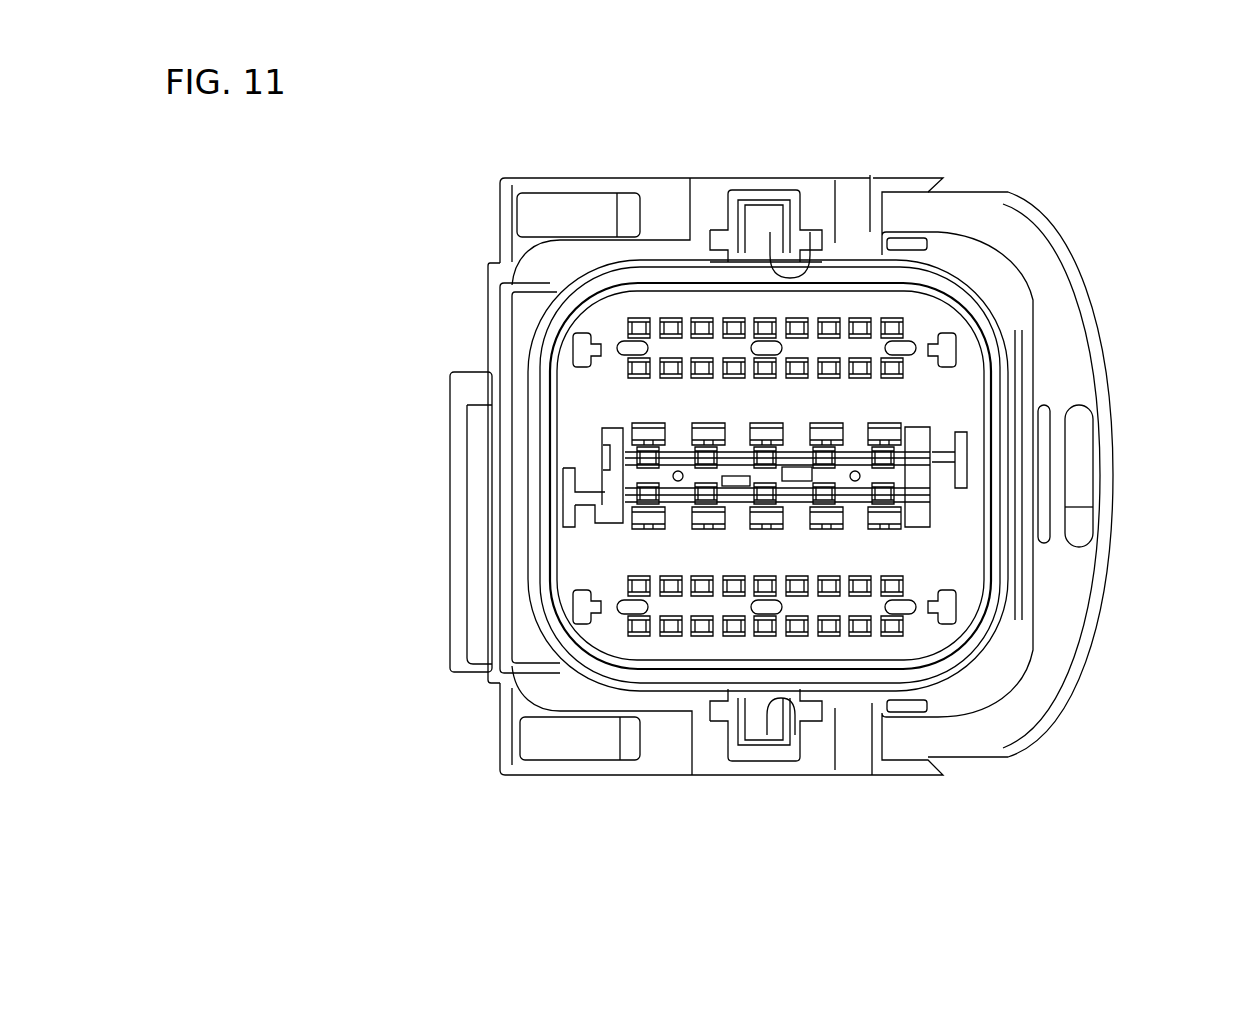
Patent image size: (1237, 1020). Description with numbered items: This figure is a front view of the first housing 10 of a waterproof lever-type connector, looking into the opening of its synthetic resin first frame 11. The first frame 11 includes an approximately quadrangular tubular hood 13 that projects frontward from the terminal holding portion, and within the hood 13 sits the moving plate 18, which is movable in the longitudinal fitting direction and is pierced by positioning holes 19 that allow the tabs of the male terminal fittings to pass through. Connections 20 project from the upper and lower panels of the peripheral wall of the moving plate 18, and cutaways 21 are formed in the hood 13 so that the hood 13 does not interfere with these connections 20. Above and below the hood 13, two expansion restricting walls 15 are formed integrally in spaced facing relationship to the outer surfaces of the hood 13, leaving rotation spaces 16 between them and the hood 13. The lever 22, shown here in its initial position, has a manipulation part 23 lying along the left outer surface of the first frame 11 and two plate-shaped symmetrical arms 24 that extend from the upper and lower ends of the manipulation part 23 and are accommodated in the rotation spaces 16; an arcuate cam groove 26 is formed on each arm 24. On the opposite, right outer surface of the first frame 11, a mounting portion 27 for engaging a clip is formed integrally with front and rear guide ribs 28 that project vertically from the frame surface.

The first housing 10 is at (460, 143).
The first frame 11 is at (458, 304).
The hood 13 is at (597, 250).
The expansion restricting walls 15 is at (680, 178).
The rotation spaces 16 is at (563, 200).
The moving plate 18 is at (948, 397).
The positioning holes 19 is at (888, 428).
The connections 20 is at (758, 202).
The cutaways 21 is at (786, 205).
The lever 22 is at (1143, 409).
The manipulation part 23 is at (1080, 558).
The arms 24 is at (905, 212).
The cam groove 26 is at (848, 250).
The mounting portion 27 is at (416, 522).
The guide ribs 28 is at (455, 505).